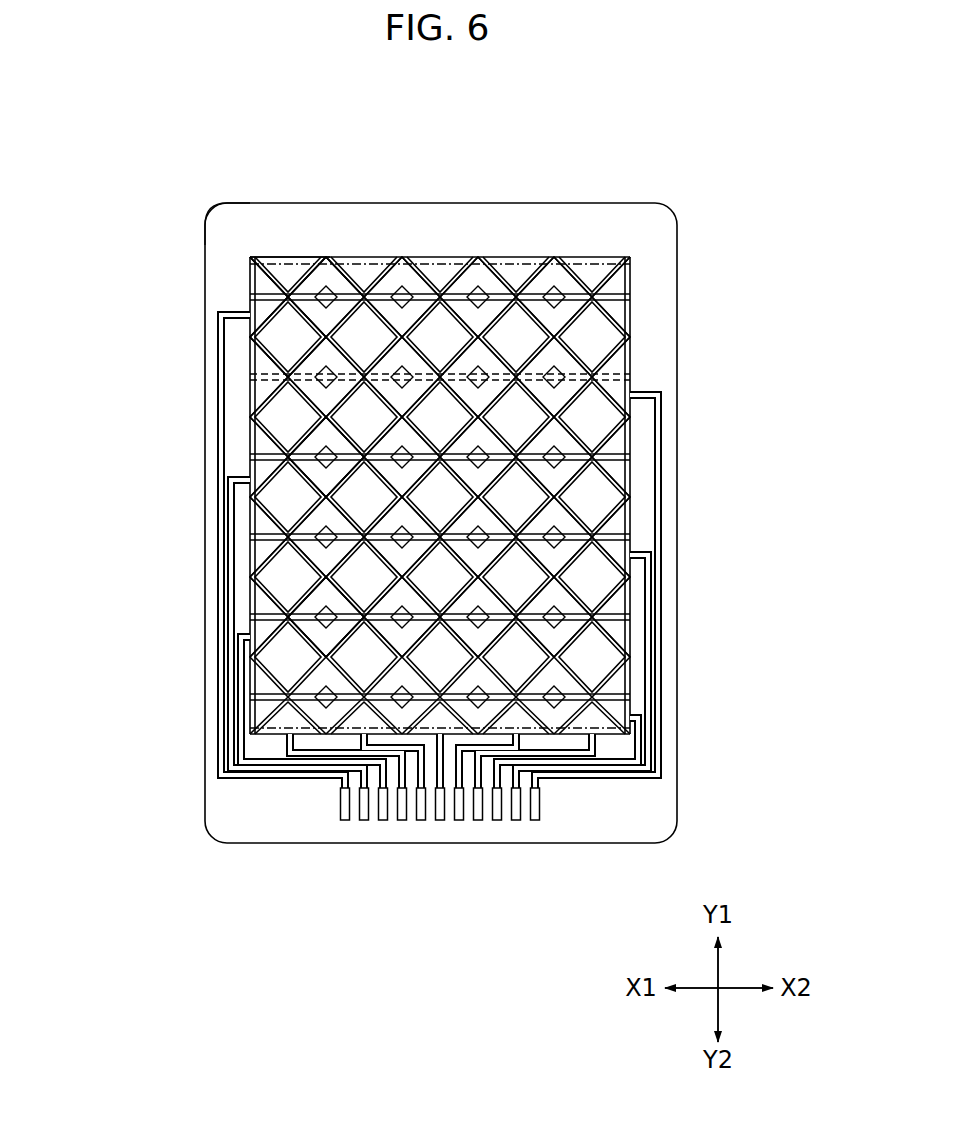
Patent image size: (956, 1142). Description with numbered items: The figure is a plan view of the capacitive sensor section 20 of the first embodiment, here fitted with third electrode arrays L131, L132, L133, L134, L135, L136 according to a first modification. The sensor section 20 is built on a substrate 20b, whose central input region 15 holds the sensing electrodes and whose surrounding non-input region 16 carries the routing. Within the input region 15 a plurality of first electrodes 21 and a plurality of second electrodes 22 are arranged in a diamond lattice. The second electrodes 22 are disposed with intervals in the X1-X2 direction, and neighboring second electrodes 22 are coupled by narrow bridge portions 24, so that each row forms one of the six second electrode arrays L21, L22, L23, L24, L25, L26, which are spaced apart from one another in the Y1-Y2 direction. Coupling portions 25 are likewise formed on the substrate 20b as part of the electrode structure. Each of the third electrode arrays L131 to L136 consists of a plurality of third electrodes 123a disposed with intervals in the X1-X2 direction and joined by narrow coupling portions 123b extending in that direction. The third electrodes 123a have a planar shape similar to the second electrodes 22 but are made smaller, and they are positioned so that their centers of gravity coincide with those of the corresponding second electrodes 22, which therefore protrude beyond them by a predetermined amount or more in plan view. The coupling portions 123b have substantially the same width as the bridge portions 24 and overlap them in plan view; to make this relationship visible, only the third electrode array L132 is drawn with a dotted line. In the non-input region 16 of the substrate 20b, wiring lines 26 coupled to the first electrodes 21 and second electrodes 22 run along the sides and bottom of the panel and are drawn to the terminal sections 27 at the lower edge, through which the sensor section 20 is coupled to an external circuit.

The capacitive sensor section 20 is at (679, 190).
The substrate 20b is at (231, 217).
The non-input region 16 is at (236, 262).
The input region 15 is at (290, 336).
The third electrode 123a is at (328, 358).
The coupling portion 123b is at (293, 296).
The second electrode 22 is at (362, 297).
The first electrode 21 is at (330, 546).
The bridge portion 24 is at (438, 376).
The coupling portion 25 is at (340, 470).
The wiring line 26 is at (242, 710).
The terminal section 27 is at (570, 828).
The second electrode array L21 is at (200, 300).
The second electrode array L22 is at (200, 366).
The second electrode array L23 is at (200, 445).
The second electrode array L24 is at (200, 527).
The second electrode array L25 is at (200, 620).
The second electrode array L26 is at (200, 697).
The third electrode array L131 is at (631, 295).
The third electrode array L132 is at (631, 380).
The third electrode array L133 is at (631, 458).
The third electrode array L134 is at (631, 542).
The third electrode array L135 is at (631, 620).
The third electrode array L136 is at (631, 700).